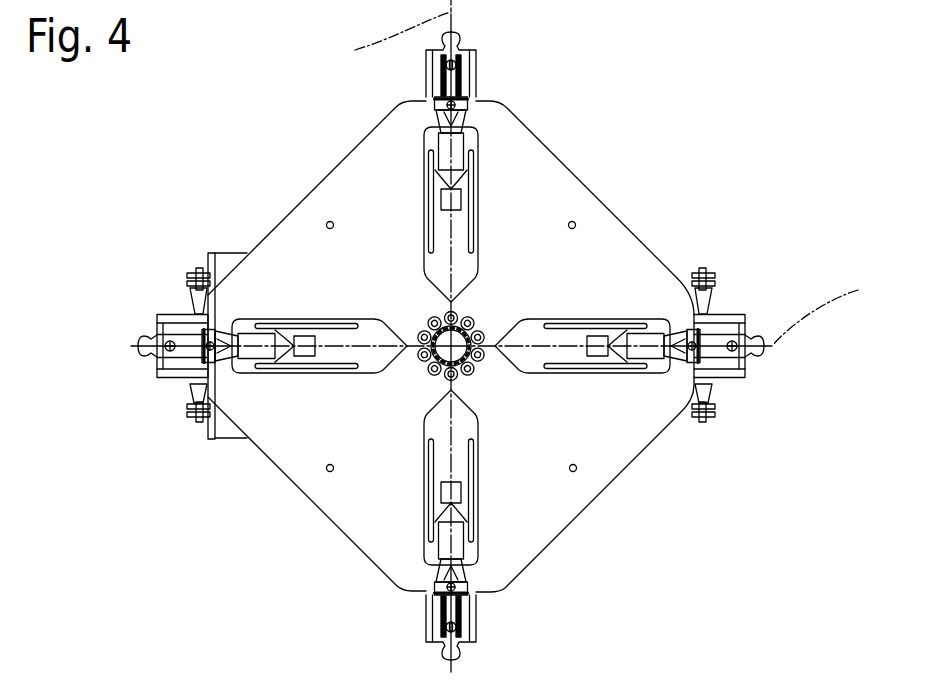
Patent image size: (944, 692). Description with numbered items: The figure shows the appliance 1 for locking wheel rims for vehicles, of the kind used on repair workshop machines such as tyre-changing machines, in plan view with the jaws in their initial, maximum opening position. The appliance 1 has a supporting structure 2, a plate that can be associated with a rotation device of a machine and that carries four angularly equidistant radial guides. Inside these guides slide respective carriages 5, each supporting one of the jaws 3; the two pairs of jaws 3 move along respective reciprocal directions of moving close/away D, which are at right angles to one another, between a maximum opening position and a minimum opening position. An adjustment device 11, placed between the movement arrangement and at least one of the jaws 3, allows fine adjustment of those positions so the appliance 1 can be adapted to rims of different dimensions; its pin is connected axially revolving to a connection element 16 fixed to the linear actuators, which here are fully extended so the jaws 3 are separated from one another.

The appliance for locking wheel rims 1 is at (711, 81).
The supporting structure 2 is at (350, 193).
The jaws 3 is at (458, 118).
The carriages 5 is at (460, 156).
The adjustment device 11 is at (448, 332).
The connection element 16 is at (189, 300).
The direction of moving close/away D is at (606, 178).